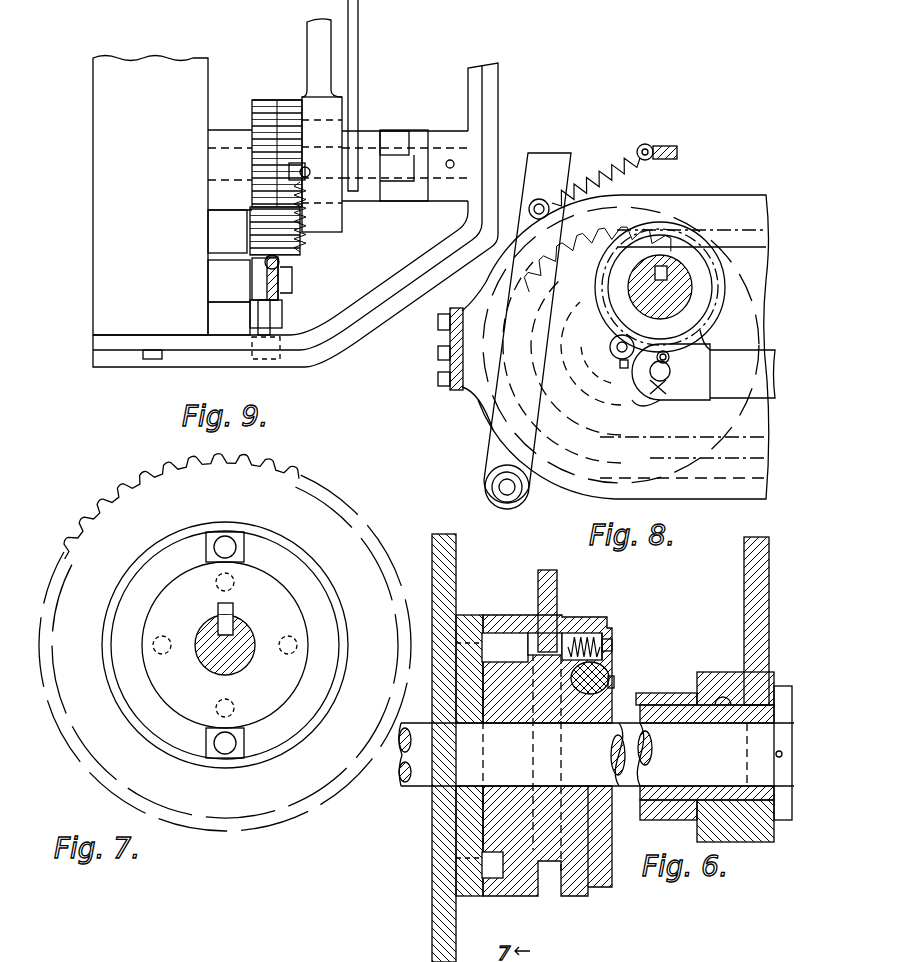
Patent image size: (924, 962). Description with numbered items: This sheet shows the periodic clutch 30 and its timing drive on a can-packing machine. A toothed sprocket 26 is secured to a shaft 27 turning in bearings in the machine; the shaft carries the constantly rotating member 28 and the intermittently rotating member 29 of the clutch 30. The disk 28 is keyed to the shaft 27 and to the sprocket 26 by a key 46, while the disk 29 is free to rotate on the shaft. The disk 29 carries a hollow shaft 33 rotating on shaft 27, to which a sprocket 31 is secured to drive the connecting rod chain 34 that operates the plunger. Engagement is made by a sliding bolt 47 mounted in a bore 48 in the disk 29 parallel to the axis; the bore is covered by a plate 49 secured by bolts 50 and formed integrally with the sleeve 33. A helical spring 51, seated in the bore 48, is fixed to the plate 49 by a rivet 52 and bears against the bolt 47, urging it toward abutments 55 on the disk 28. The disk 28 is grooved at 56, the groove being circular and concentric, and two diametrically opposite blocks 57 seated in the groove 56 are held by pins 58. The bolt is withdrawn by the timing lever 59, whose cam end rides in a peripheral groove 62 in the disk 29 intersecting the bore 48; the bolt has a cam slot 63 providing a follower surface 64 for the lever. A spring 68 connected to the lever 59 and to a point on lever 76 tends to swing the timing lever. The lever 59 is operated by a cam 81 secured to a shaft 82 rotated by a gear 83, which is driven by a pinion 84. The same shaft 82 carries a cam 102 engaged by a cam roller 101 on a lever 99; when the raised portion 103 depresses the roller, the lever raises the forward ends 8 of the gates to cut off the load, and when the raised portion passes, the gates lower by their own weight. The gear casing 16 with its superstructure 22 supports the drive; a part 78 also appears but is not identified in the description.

In FIG. 9, the forward ends of the gates 8 is at (323, 126).
In FIG. 9, the gear casing 16 is at (208, 197).
In FIG. 9, the superstructure 22 is at (369, 338).
In FIG. 7, the toothed sprocket 26 is at (225, 642).
In FIG. 6, the toothed sprocket 26 is at (433, 534).
In FIG. 7, the shaft 27 is at (251, 662).
In FIG. 6, the shaft 27 is at (409, 783).
In FIG. 6, the constantly rotating clutch member 28 is at (466, 617).
In FIG. 6, the intermittently rotating clutch member 29 is at (506, 640).
In FIG. 6, the periodic clutch 30 is at (508, 897).
In FIG. 8, the sprocket 31 is at (615, 347).
In FIG. 6, the sprocket 31 is at (769, 552).
In FIG. 6, the hollow shaft 33 is at (666, 681).
In FIG. 8, the connecting rod chain 34 is at (735, 472).
In FIG. 6, the key 46 is at (483, 735).
In FIG. 6, the sliding bolt 47 is at (505, 657).
In FIG. 6, the bore 48 is at (614, 686).
In FIG. 6, the plate 49 is at (612, 838).
In FIG. 6, the bolts 50 is at (608, 673).
In FIG. 6, the helical spring 51 is at (606, 640).
In FIG. 6, the rivet 52 is at (612, 647).
In FIG. 7, the abutments 55 is at (206, 548).
In FIG. 7, the groove 56 is at (290, 575).
In FIG. 6, the groove 56 is at (494, 645).
In FIG. 7, the blocks 57 is at (244, 545).
In FIG. 6, the blocks 57 is at (516, 625).
In FIG. 6, the pins 58 is at (479, 889).
In FIG. 9, the timing lever 59 is at (326, 185).
In FIG. 6, the timing lever 59 is at (557, 580).
In FIG. 6, the peripheral groove 62 is at (550, 880).
In FIG. 6, the cam slot 63 is at (542, 652).
In FIG. 6, the follower surface 64 is at (588, 636).
In FIG. 8, the spring 68 is at (644, 145).
In FIG. 8, the lever 76 is at (480, 392).
In FIG. 9, the spring 78 is at (281, 290).
In FIG. 8, the spring 78 is at (566, 166).
In FIG. 9, the cam 81 is at (408, 130).
In FIG. 8, the shaft 82 is at (676, 287).
In FIG. 9, the gear 83 is at (254, 100).
In FIG. 9, the pinion 84 is at (300, 236).
In FIG. 8, the lever 99 is at (692, 400).
In FIG. 8, the cam roller 101 is at (650, 401).
In FIG. 8, the cam 102 is at (703, 333).
In FIG. 8, the raised portion of the cam 103 is at (611, 356).